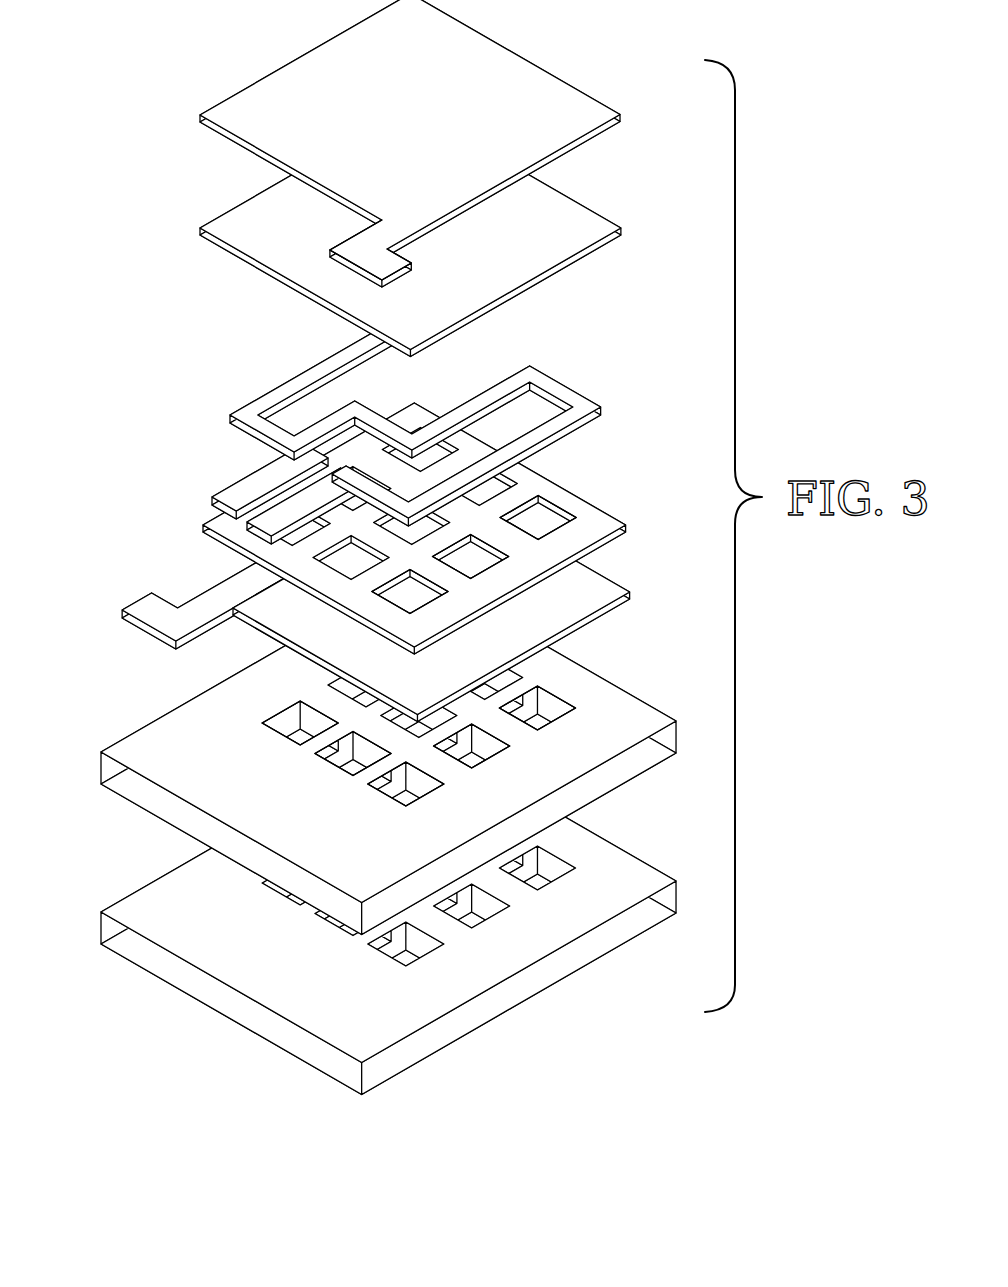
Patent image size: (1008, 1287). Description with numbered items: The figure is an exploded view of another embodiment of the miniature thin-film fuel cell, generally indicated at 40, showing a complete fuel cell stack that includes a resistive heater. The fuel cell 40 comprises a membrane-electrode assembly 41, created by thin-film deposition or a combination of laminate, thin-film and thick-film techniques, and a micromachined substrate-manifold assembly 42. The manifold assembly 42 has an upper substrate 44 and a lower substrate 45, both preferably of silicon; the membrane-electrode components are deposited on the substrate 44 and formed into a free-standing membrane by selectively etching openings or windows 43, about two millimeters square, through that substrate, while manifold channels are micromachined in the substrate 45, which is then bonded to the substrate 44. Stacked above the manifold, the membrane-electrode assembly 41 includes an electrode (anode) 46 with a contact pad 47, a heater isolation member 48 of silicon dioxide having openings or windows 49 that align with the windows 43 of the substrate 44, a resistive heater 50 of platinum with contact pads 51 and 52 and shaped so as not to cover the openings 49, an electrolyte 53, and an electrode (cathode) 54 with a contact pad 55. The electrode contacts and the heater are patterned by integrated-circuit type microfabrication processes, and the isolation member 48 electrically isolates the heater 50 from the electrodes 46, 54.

The fuel cell 40 is at (411, 547).
The membrane-electrode assembly 41 is at (386, 361).
The substrate-manifold assembly 42 is at (386, 833).
The openings or windows 43 is at (486, 745).
The substrate 44 is at (388, 753).
The substrate 45 is at (640, 878).
The electrode (anode) 46 is at (493, 597).
The contact pad 47 is at (143, 610).
The heater isolation member 48 is at (446, 528).
The openings or window 49 is at (498, 487).
The resistive heater 50 is at (565, 386).
The contact pad 51 is at (250, 487).
The contact pad 52 is at (219, 489).
The electrolyte 53 is at (560, 242).
The electrode (cathode) 54 is at (396, 159).
The contact pad 55 is at (348, 258).